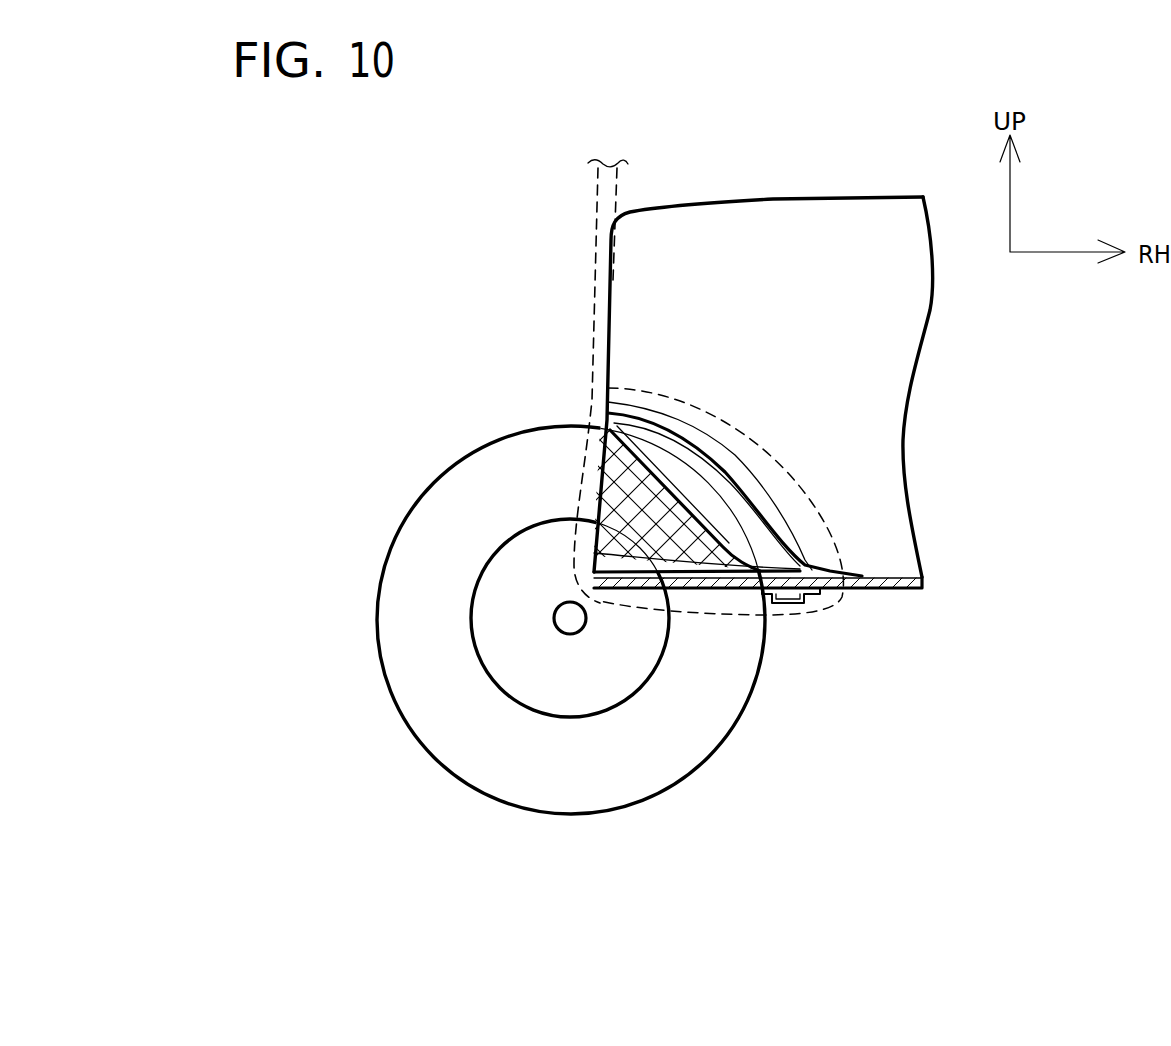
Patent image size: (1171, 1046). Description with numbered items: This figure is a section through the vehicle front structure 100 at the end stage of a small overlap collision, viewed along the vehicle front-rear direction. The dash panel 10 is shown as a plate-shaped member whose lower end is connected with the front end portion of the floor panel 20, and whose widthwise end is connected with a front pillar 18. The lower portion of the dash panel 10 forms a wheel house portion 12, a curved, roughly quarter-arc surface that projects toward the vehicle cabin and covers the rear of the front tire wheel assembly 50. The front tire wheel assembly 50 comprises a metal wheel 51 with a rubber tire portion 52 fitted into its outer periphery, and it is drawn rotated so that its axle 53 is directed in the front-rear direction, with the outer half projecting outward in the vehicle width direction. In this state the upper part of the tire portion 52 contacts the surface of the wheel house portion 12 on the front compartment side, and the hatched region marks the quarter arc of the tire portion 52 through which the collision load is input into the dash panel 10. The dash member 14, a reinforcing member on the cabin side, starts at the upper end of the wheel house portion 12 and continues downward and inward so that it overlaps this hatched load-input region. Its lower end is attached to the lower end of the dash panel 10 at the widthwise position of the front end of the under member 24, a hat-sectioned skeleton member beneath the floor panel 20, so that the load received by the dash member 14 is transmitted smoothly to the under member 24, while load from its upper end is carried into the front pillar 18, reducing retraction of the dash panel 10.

The vehicle front structure 100 is at (552, 65).
The dash panel 10 is at (770, 173).
The wheel house portion 12 is at (600, 425).
The dash member 14 is at (672, 443).
The front pillar 18 is at (597, 200).
The floor panel 20 is at (890, 592).
The under member 24 is at (805, 600).
The front tire wheel assembly 50 is at (617, 822).
The wheel 51 is at (633, 648).
The tire portion 52 is at (713, 757).
The axle 53 is at (553, 630).